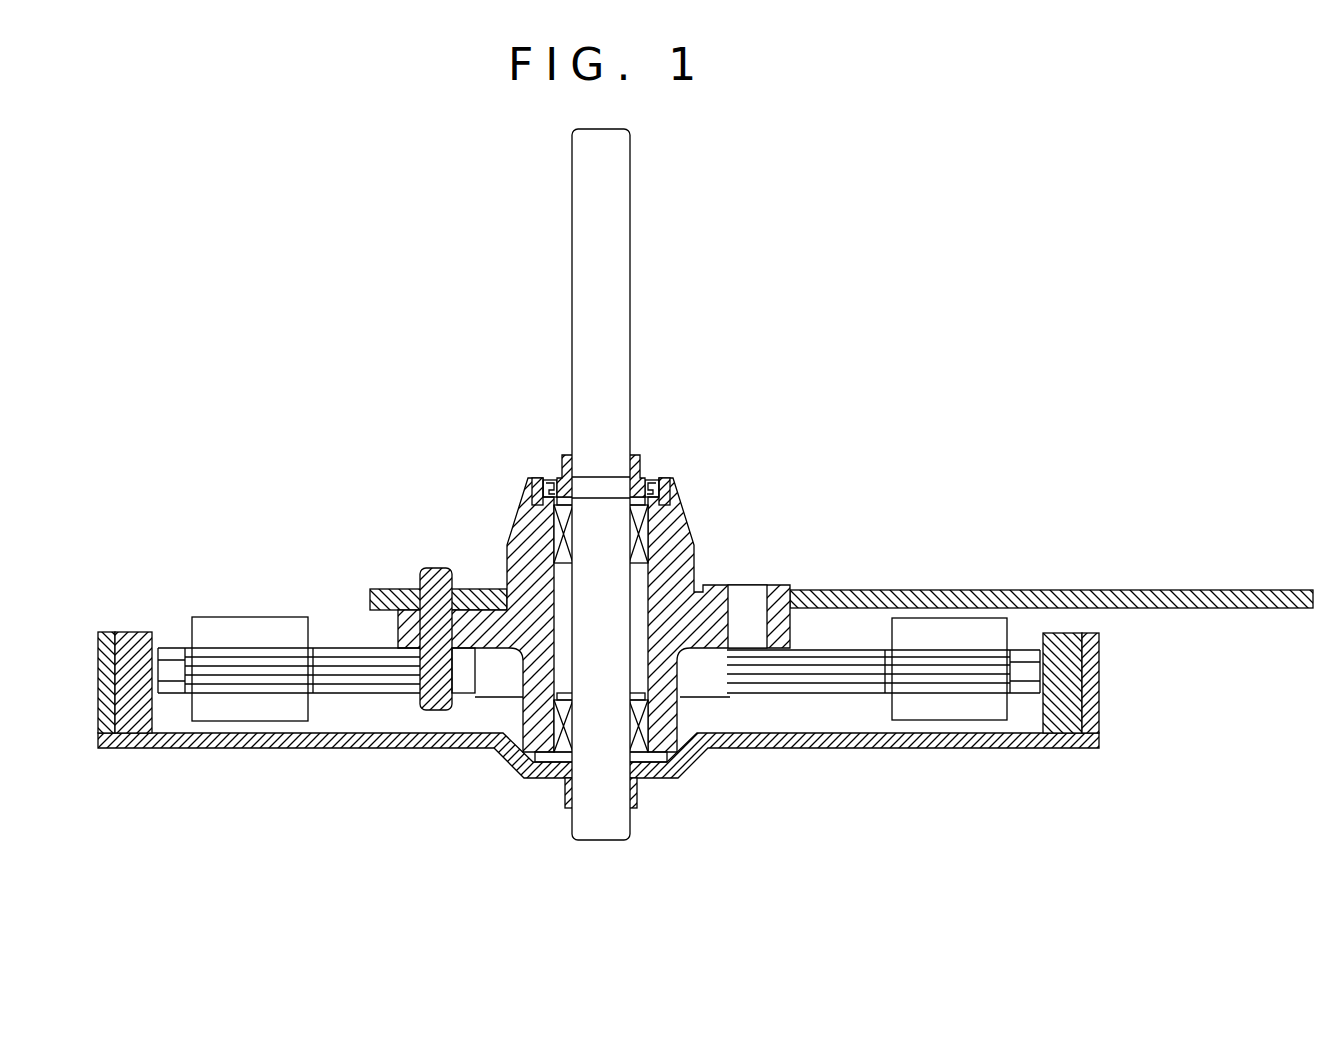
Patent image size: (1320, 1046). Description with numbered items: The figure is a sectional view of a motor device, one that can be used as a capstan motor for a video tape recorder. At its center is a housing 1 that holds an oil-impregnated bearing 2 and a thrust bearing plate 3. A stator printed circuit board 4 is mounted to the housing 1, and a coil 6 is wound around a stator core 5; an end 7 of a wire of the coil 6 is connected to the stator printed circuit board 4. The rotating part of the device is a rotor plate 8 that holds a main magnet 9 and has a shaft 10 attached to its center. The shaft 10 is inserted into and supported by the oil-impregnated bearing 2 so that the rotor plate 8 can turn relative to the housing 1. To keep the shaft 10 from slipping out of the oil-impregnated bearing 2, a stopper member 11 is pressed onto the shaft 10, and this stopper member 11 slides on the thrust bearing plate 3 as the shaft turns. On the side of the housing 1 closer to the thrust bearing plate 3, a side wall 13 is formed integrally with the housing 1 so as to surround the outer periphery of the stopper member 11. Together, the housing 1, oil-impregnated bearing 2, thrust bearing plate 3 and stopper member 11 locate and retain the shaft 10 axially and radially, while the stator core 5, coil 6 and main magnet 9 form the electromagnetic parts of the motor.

The housing 1 is at (673, 513).
The oil-impregnated bearing 2 is at (645, 530).
The thrust bearing plate 3 is at (523, 505).
The stator printed circuit board 4 is at (1060, 590).
The stator core 5 is at (375, 648).
The coil 6 is at (233, 617).
The end of a wire of the coil 7 is at (858, 648).
The rotor plate 8 is at (850, 749).
The main magnet 9 is at (1070, 690).
The shaft 10 is at (633, 820).
The stopper member 11 is at (642, 465).
The side wall 13 is at (520, 498).